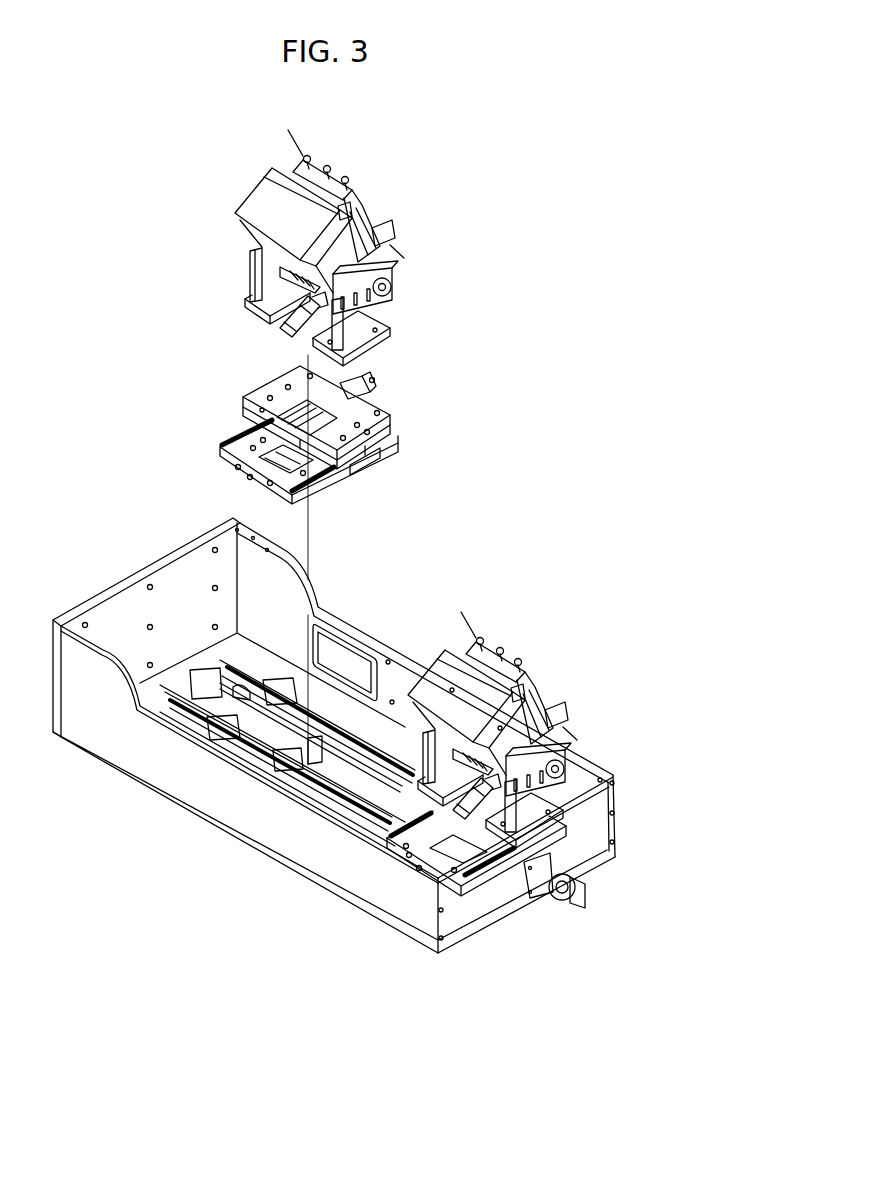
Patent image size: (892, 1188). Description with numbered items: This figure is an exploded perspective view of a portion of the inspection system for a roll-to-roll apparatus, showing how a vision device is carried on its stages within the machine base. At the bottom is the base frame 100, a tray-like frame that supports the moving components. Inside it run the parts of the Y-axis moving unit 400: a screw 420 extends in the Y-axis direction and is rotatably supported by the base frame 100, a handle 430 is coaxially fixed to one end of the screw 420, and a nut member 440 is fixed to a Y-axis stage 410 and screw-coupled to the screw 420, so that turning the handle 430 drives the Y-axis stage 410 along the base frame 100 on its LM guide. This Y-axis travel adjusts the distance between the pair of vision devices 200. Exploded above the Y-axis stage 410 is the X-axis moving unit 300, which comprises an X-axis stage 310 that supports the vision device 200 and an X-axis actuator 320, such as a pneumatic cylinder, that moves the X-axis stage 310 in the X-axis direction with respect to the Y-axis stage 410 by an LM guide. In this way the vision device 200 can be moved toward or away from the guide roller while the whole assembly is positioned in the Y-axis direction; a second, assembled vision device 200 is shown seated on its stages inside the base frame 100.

The base frame 100 is at (147, 573).
The vision device 200 is at (249, 158).
The X-axis moving unit 300 is at (254, 416).
The X-axis stage 310 is at (262, 403).
The X-axis actuator 320 is at (353, 390).
The Y-axis moving unit 400 is at (372, 849).
The Y-axis stage 410 is at (331, 482).
The screw 420 is at (400, 793).
The handle 430 is at (554, 927).
The nut member 440 is at (308, 776).